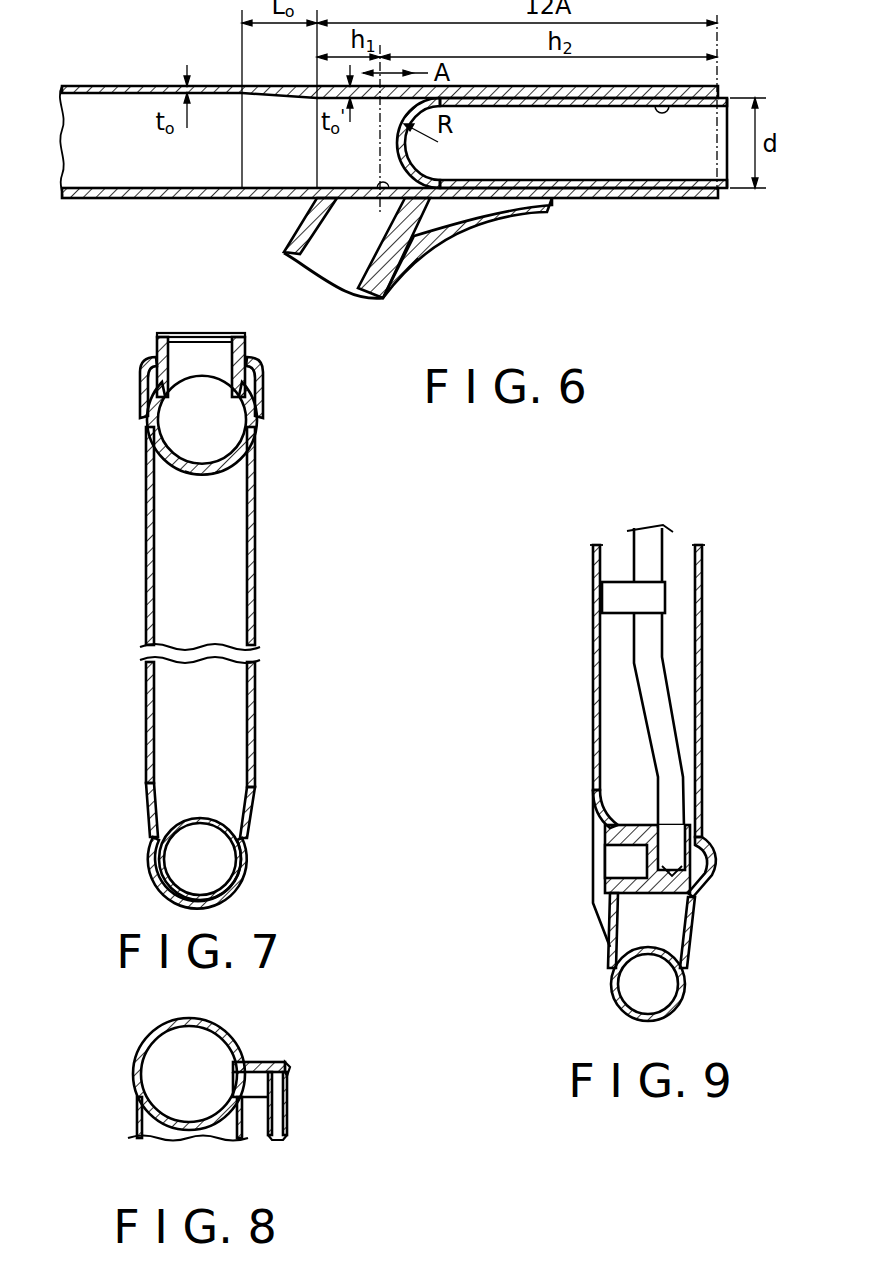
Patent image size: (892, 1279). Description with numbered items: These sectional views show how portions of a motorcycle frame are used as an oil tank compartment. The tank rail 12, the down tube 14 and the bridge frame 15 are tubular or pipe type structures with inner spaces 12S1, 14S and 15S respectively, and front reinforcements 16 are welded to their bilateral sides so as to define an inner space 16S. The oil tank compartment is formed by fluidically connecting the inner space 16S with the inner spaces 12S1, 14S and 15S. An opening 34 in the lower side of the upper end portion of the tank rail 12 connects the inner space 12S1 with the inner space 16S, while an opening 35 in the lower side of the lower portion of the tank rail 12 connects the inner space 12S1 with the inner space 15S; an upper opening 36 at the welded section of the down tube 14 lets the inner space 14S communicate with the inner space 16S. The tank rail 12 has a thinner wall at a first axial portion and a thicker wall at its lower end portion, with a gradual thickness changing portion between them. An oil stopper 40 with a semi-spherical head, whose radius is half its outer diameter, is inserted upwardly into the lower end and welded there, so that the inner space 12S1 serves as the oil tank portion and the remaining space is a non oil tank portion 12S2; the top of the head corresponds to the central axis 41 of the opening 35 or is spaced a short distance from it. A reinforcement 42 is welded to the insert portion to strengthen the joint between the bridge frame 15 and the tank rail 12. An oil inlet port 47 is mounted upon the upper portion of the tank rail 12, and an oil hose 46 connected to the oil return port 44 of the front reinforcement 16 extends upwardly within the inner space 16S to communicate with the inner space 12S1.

In FIG. 6, the tank rail 12 is at (143, 82).
In FIG. 7, the tank rail 12 is at (246, 454).
In FIG. 8, the tank rail 12 is at (141, 1052).
In FIG. 6, the inner space of the tank rail 12S1 is at (146, 164).
In FIG. 7, the inner space of the tank rail 12S1 is at (230, 435).
In FIG. 8, the inner space of the tank rail 12S1 is at (162, 1098).
In FIG. 6, the non oil tank portion 12S2 is at (650, 172).
In FIG. 7, the down tube 14 is at (240, 864).
In FIG. 7, the inner space of the down tube 14S is at (172, 868).
In FIG. 6, the bridge frame 15 is at (293, 240).
In FIG. 9, the bridge frame 15 is at (612, 990).
In FIG. 6, the inner space of the bridge frame 15S is at (362, 258).
In FIG. 9, the inner space of the bridge frame 15S is at (627, 998).
In FIG. 7, the front reinforcements 16 is at (146, 590).
In FIG. 8, the front reinforcements 16 is at (133, 1125).
In FIG. 9, the front reinforcements 16 is at (593, 681).
In FIG. 7, the inner space of the reinforcements 16S is at (180, 571).
In FIG. 9, the inner space of the reinforcements 16S is at (645, 758).
In FIG. 7, the opening 34 is at (193, 470).
In FIG. 6, the opening 35 is at (372, 190).
In FIG. 7, the upper opening 36 is at (205, 811).
In FIG. 6, the oil stopper 40 is at (690, 96).
In FIG. 6, the central axis 41 is at (403, 284).
In FIG. 6, the reinforcement 42 is at (472, 222).
In FIG. 9, the oil return port 44 is at (604, 832).
In FIG. 9, the oil hose 46 is at (665, 645).
In FIG. 7, the oil inlet port 47 is at (156, 335).